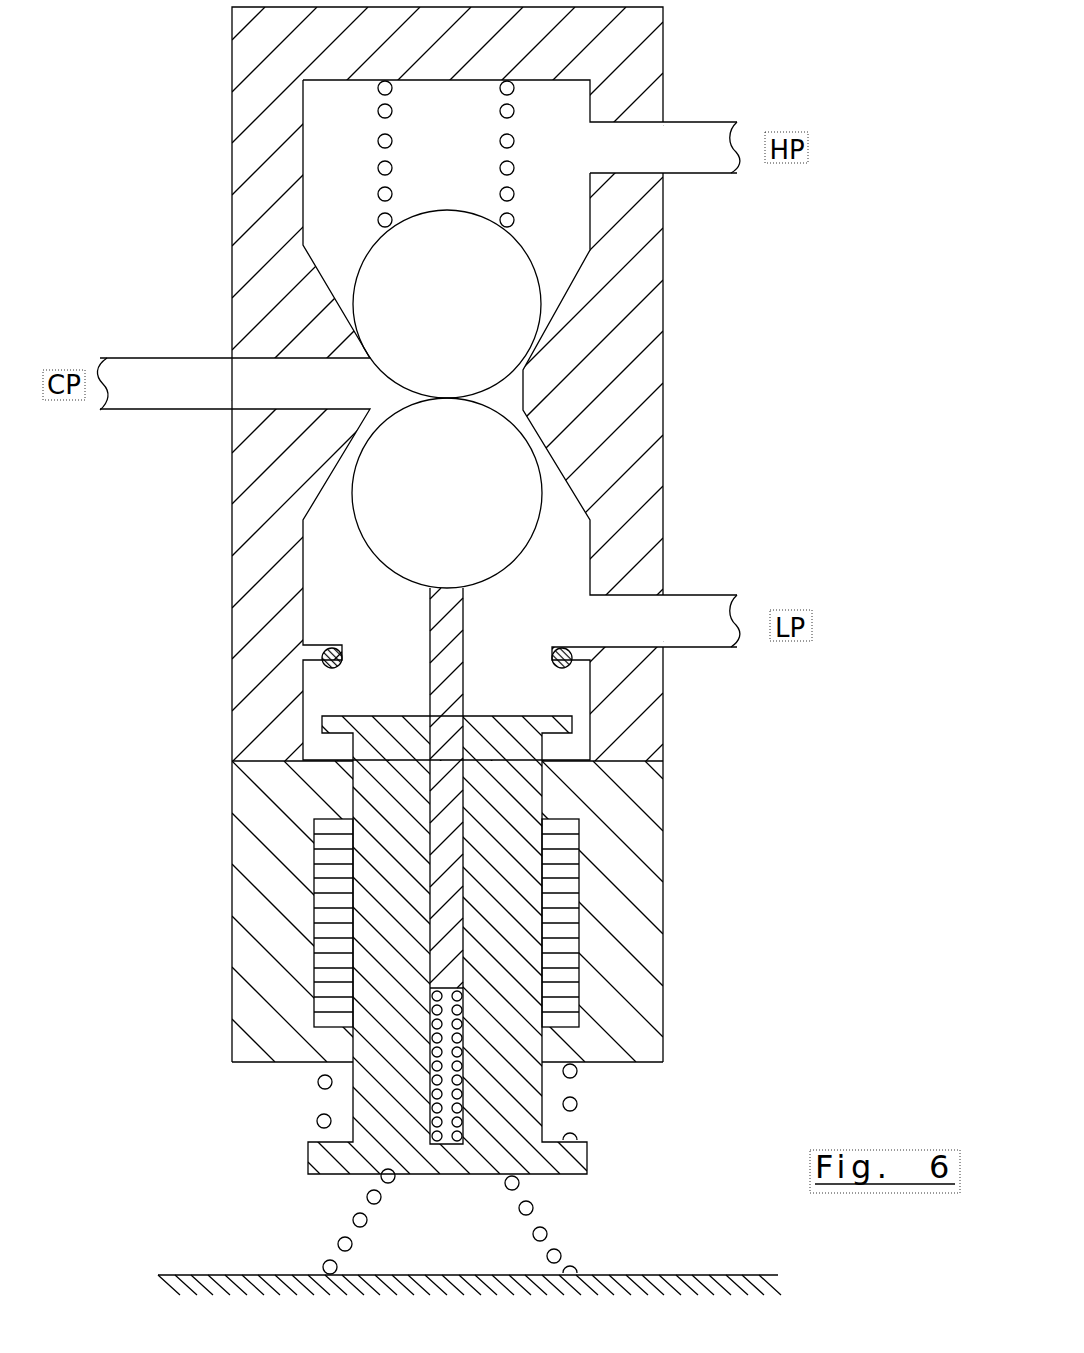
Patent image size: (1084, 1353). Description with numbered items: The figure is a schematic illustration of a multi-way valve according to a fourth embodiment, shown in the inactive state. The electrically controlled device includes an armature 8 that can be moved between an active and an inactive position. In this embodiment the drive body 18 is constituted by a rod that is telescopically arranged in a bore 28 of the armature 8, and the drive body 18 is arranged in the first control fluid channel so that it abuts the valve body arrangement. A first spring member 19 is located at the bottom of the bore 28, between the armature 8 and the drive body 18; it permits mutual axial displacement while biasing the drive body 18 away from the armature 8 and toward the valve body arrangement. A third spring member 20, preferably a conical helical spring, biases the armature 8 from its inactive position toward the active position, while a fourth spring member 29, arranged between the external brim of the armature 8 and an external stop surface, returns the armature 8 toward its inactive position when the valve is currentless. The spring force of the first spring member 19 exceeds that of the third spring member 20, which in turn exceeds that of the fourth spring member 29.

The armature 8 is at (345, 1175).
The drive body 18 is at (445, 612).
The first spring member 19 is at (460, 1112).
The third spring member 20 is at (542, 1233).
The bore 28 is at (435, 832).
The fourth spring member 29 is at (318, 1121).